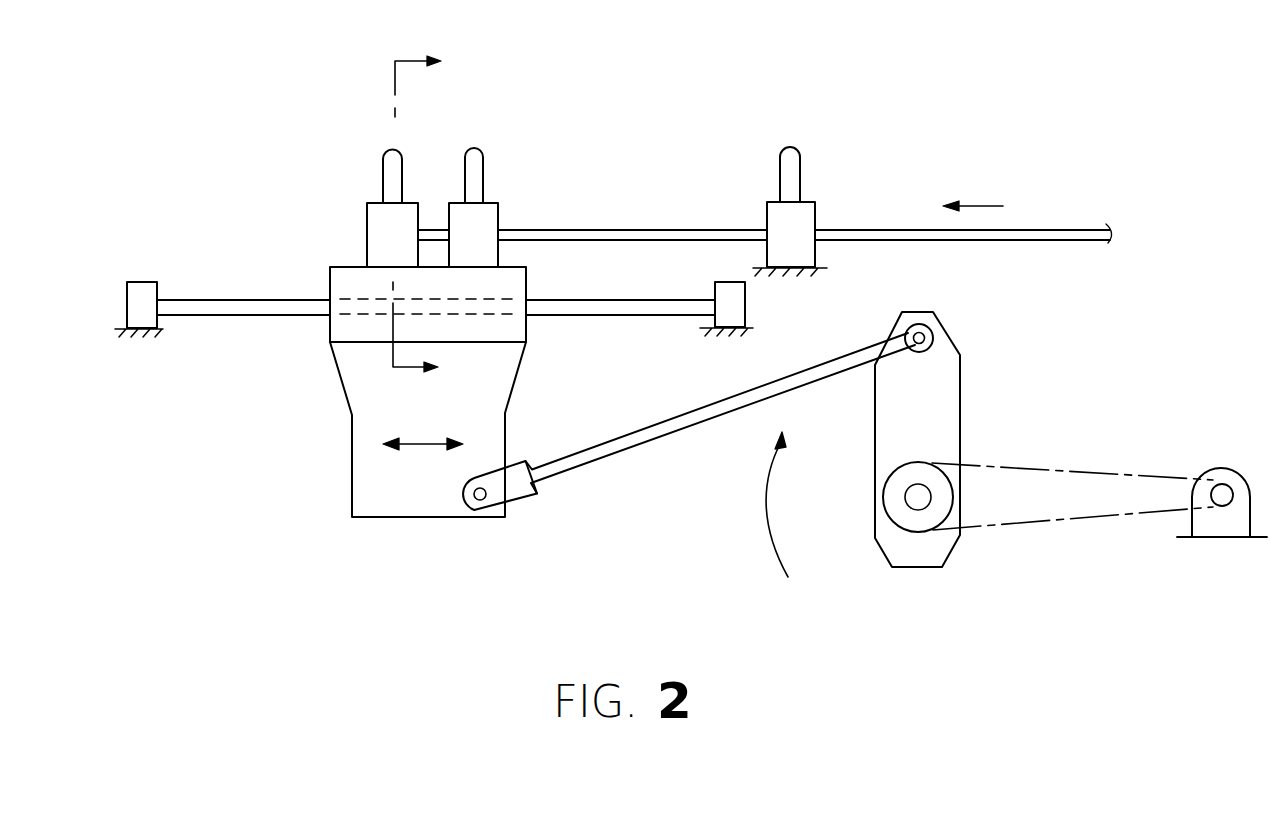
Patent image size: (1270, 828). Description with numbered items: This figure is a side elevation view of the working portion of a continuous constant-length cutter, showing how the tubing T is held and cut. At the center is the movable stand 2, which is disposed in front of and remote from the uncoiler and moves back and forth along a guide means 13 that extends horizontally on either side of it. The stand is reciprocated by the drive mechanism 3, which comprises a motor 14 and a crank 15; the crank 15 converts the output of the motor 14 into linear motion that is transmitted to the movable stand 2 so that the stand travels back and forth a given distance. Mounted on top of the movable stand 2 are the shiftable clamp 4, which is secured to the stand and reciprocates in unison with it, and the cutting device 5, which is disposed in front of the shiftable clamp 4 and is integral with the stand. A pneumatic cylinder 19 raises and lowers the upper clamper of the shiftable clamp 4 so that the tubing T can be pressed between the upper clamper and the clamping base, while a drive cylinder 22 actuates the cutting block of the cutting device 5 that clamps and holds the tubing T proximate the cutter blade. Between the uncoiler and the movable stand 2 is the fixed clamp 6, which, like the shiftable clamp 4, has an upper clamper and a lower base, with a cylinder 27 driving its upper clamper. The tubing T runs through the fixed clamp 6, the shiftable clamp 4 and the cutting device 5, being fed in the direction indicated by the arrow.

The movable stand 2 is at (352, 365).
The drive mechanism 3 is at (1119, 563).
The shiftable clamp 4 is at (485, 218).
The cutting device 5 is at (373, 223).
The fixed clamp 6 is at (803, 217).
The guide means 13 is at (208, 308).
The motor 14 is at (1227, 480).
The crank 15 is at (942, 377).
The pneumatic cylinder 19 is at (477, 160).
The drive cylinder 22 is at (390, 157).
The cylinder 27 is at (790, 158).
The tubing T is at (915, 233).